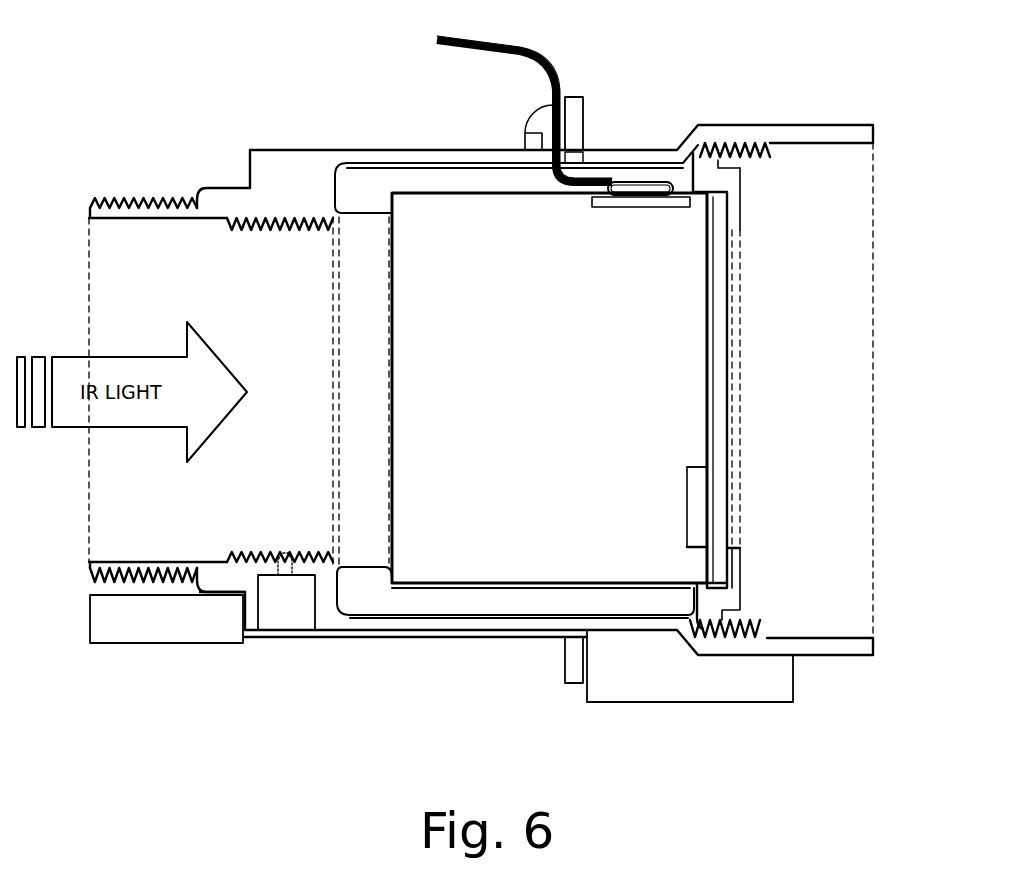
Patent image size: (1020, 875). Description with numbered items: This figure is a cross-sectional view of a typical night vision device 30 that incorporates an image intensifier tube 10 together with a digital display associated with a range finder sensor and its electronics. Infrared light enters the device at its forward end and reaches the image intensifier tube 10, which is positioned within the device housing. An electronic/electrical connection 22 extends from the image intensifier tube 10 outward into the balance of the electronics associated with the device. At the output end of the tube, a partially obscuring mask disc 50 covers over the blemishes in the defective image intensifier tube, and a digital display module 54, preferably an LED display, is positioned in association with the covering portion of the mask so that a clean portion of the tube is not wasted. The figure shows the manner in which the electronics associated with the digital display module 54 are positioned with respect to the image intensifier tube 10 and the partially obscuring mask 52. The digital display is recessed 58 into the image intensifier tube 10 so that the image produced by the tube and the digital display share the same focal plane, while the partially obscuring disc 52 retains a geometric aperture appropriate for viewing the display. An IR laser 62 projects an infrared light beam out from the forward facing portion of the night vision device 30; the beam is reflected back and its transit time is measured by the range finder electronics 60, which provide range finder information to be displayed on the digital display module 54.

The night vision device 30 is at (122, 97).
The image intensifier tube 10 is at (463, 233).
The electronic/electrical connection 22 is at (505, 47).
The partially obscuring mask 52 is at (718, 300).
The partially obscuring mask disc 50 is at (750, 385).
The digital display module 54 is at (688, 515).
The recess 58 is at (698, 465).
The range finder electronics 60 is at (665, 673).
The IR laser 62 is at (125, 625).